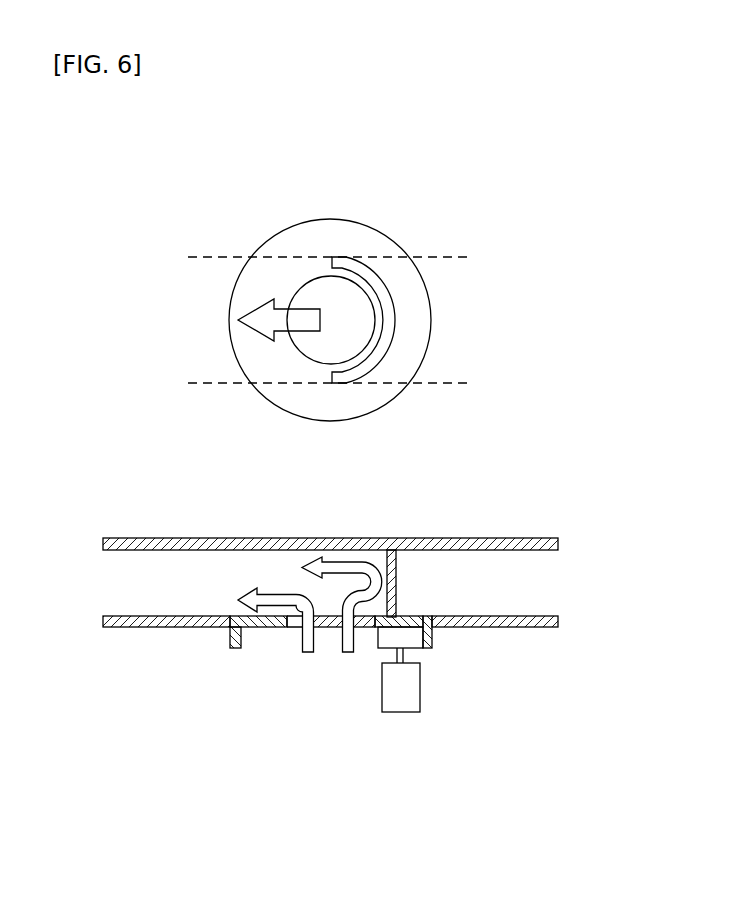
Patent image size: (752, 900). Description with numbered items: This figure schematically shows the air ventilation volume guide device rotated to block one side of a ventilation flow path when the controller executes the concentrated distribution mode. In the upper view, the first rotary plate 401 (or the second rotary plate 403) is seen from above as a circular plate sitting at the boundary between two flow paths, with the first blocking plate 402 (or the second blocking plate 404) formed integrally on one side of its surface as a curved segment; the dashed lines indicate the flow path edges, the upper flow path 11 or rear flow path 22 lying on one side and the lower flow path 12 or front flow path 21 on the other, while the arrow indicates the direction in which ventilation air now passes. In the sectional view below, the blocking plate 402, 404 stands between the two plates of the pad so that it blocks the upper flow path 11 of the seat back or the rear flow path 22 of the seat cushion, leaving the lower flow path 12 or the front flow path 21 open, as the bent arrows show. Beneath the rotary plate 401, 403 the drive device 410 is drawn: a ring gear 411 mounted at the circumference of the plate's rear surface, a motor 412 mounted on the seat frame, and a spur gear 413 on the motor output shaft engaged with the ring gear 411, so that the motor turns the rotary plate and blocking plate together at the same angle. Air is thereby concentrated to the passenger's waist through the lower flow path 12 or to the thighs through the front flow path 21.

The upper flow path 11 is at (353, 401).
The rear flow path 22 is at (452, 257).
The lower flow path 12 is at (306, 372).
The front flow path 21 is at (210, 257).
The first rotary plate 401 is at (304, 426).
The second rotary plate 403 is at (343, 217).
The first blocking plate 402 is at (474, 437).
The second blocking plate 404 is at (393, 312).
The drive device 410 is at (403, 730).
The ring gear 411 is at (432, 640).
The motor 412 is at (402, 698).
The spur gear 413 is at (382, 643).